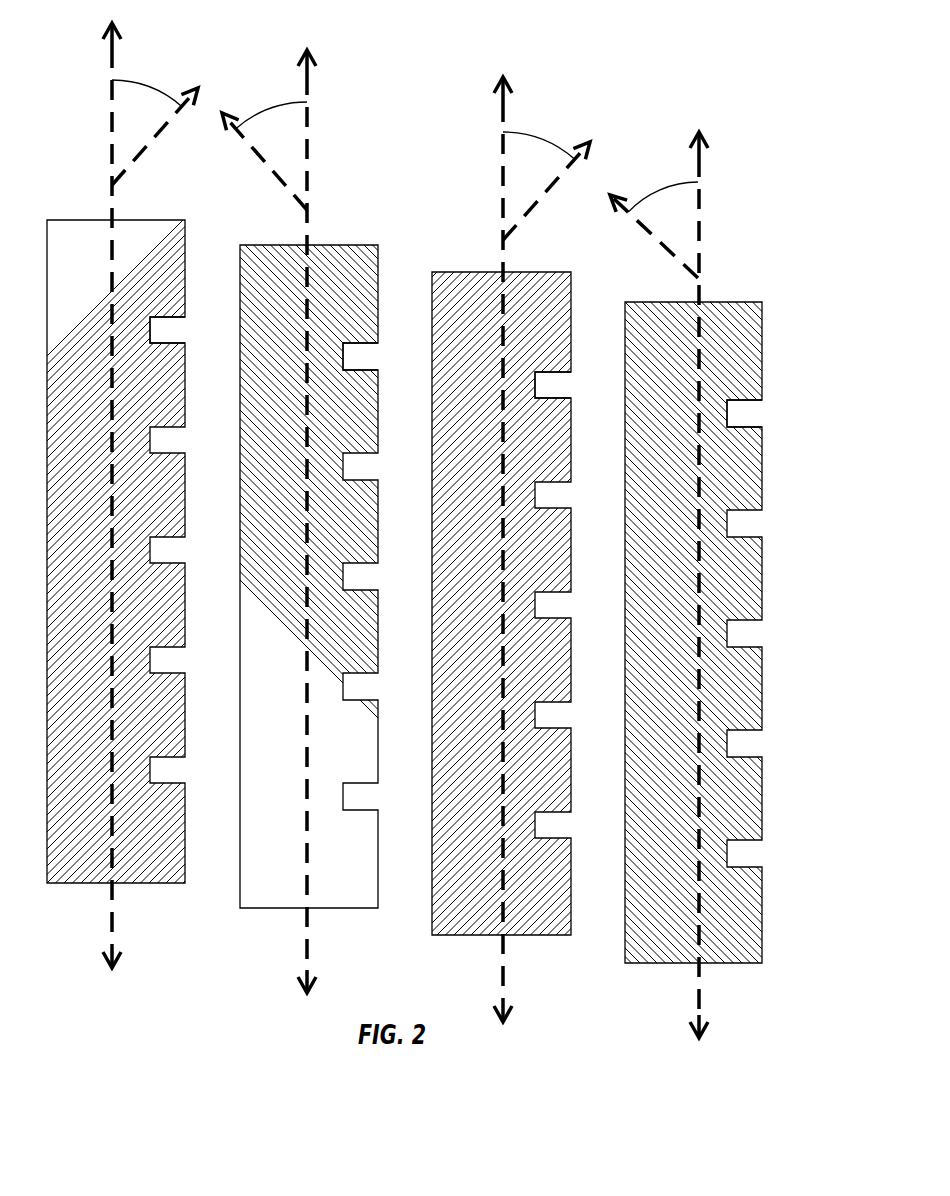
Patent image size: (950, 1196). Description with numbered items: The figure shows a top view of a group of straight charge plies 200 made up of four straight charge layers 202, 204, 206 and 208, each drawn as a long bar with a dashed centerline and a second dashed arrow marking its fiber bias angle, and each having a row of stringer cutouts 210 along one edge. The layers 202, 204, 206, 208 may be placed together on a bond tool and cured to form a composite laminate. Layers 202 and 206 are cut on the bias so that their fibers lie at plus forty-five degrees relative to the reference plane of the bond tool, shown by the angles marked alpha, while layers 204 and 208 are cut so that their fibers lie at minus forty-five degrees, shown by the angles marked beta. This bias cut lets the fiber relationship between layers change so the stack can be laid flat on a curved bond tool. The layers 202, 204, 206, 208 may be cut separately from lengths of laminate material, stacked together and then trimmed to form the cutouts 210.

The heat exchange element assembly 200 is at (412, 127).
The straight charge layer 202 is at (92, 220).
The straight charge layer 204 is at (287, 245).
The straight charge layer 206 is at (482, 272).
The straight charge layer 208 is at (668, 302).
The cutouts 210 is at (183, 328).